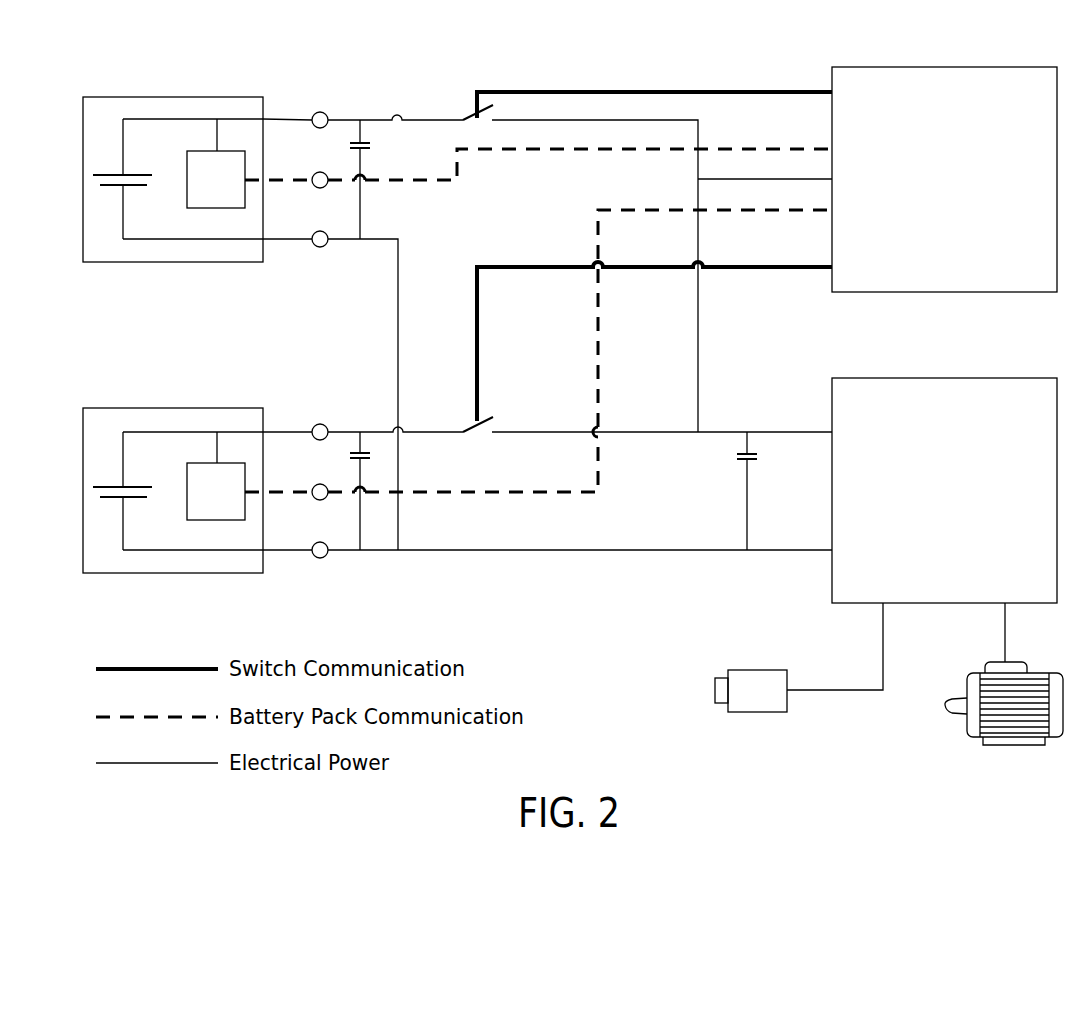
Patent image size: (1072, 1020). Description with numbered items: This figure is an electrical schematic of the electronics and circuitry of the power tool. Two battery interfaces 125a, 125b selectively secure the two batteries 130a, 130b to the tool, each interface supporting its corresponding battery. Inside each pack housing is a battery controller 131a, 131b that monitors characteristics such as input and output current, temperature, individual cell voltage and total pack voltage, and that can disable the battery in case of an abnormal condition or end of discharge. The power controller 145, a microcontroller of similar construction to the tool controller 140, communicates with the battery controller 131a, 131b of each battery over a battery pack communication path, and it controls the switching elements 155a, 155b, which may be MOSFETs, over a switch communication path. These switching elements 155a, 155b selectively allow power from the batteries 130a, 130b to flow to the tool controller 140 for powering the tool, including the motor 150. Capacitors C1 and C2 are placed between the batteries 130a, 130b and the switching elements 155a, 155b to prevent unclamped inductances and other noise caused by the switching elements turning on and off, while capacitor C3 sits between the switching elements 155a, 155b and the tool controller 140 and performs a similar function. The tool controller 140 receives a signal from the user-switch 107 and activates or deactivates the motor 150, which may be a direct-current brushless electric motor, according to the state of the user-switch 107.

The battery 130a is at (125, 96).
The battery 130b is at (128, 407).
The battery controller 131a is at (239, 191).
The battery controller 131b is at (239, 504).
The battery interface 125a is at (315, 112).
The battery interface 125b is at (316, 424).
The switching element 155a is at (463, 117).
The switching element 155b is at (463, 429).
The capacitor C1 is at (362, 117).
The capacitor C2 is at (361, 429).
The capacitor C3 is at (748, 430).
The power controller 145 is at (962, 214).
The tool controller 140 is at (962, 525).
The user-switch 107 is at (775, 704).
The motor 150 is at (966, 723).